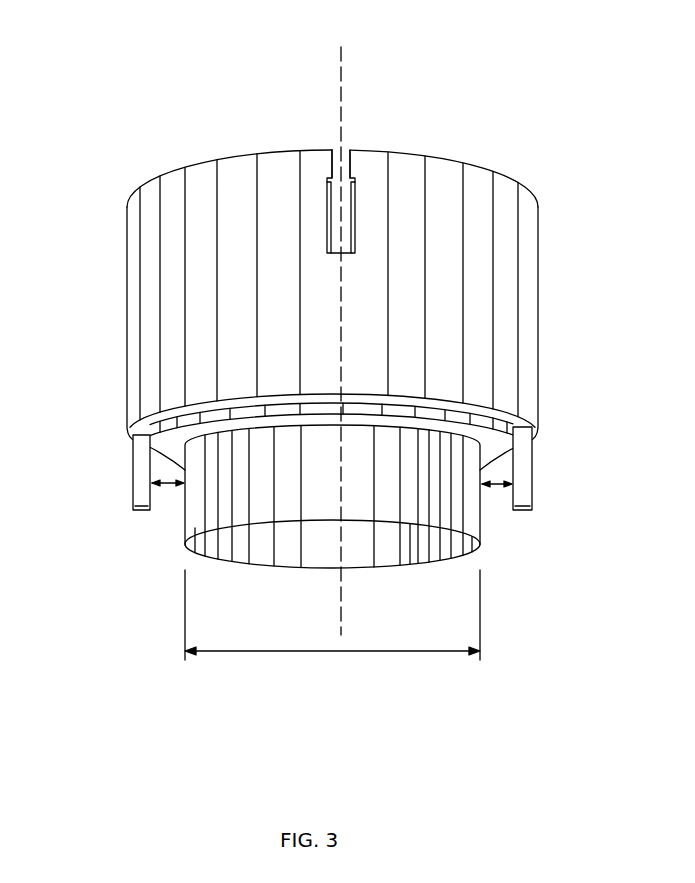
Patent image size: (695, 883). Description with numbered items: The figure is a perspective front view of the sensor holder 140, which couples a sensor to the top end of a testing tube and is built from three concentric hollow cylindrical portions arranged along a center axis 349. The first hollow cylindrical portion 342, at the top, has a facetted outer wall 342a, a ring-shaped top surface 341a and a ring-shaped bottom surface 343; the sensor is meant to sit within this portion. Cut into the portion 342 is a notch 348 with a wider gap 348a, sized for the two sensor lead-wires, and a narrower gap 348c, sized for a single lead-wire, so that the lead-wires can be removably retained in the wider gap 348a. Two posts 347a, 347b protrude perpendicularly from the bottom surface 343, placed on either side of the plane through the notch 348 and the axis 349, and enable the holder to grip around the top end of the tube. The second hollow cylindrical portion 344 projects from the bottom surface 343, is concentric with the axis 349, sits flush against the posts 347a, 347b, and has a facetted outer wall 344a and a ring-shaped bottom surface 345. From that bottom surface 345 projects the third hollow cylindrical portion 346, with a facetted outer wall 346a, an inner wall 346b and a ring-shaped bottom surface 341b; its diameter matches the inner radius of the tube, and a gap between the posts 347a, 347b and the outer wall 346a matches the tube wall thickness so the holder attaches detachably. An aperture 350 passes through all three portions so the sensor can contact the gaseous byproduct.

The sensor holder 140 is at (578, 70).
The ring-shaped top surface 341a is at (483, 167).
The ring-shaped bottom surface 341b is at (446, 568).
The first hollow cylindrical portion 342 is at (544, 226).
The outer wall 342a is at (505, 300).
The ring-shaped bottom surface 343 is at (520, 424).
The second hollow cylindrical portion 344 is at (436, 410).
The outer wall 344a is at (528, 438).
The ring-shaped bottom surface 345 is at (495, 455).
The third hollow cylindrical portion 346 is at (490, 518).
The outer wall 346a is at (458, 517).
The inner wall 346b is at (388, 570).
The post 347a is at (145, 483).
The post 347b is at (525, 499).
The notch 348 is at (357, 142).
The wider gap 348a is at (340, 228).
The narrower gap 348c is at (345, 140).
The center axis 349 is at (340, 592).
The aperture 350 is at (325, 652).